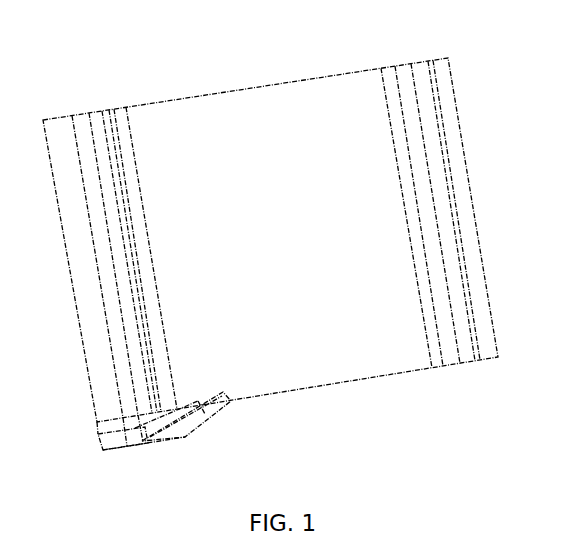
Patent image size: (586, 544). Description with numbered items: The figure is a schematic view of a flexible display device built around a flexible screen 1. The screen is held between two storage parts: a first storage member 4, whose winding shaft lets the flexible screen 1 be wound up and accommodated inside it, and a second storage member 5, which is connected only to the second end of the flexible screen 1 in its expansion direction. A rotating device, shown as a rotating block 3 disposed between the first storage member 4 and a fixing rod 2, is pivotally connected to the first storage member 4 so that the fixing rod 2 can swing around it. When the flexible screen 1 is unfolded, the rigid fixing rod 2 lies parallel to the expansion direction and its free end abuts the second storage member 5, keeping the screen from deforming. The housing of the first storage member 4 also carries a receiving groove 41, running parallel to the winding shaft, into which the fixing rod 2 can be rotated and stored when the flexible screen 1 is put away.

The flexible screen 1 is at (243, 126).
The fixing rod 2 is at (200, 424).
The rotating block 3 is at (112, 443).
The first storage member 4 is at (98, 236).
The receiving groove 41 is at (101, 138).
The second storage member 5 is at (478, 226).